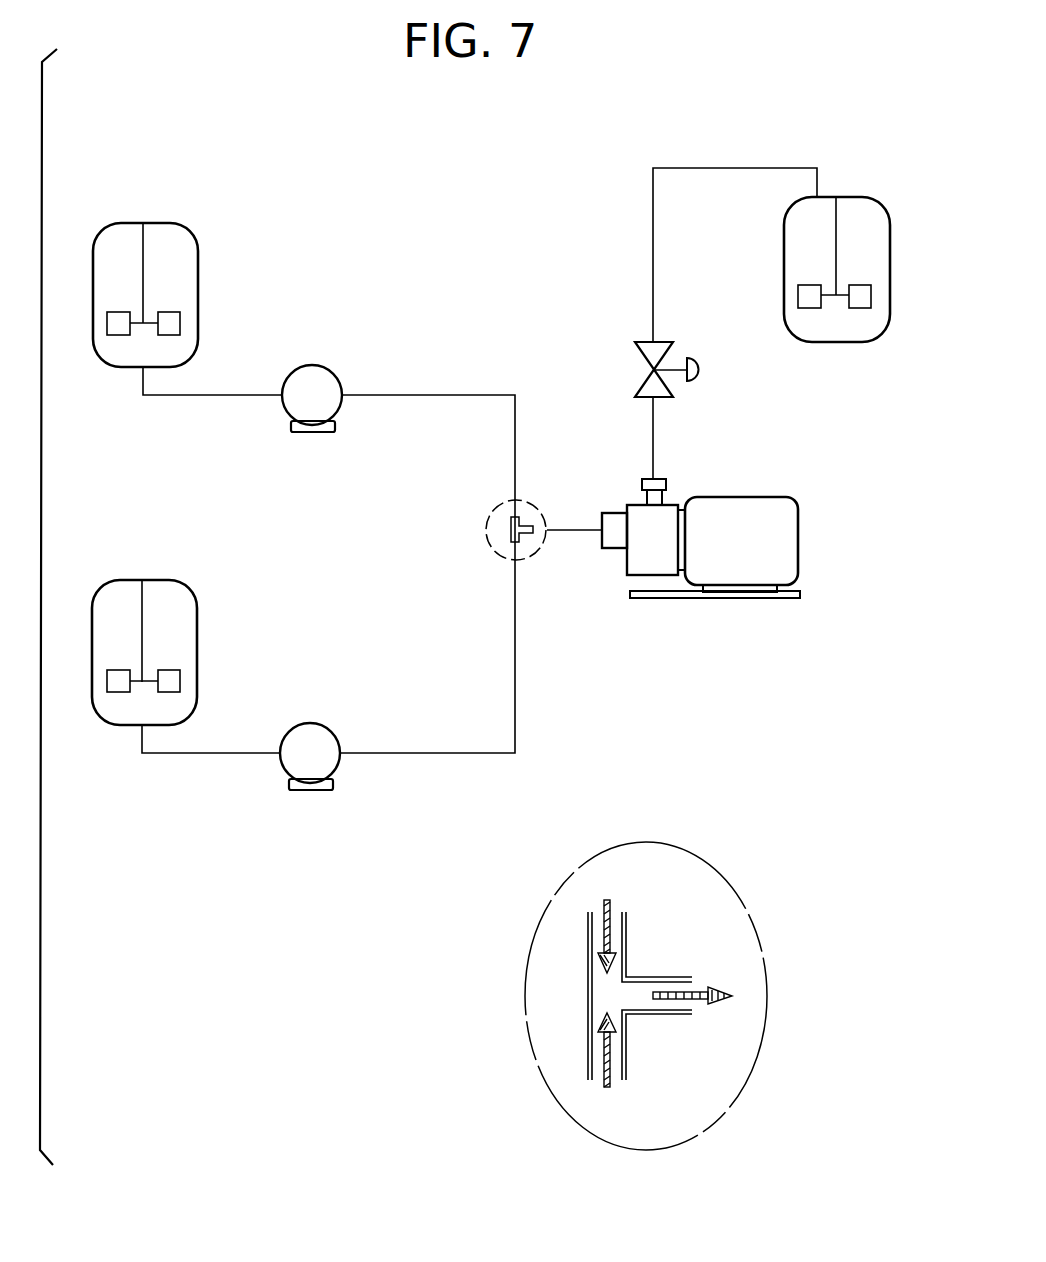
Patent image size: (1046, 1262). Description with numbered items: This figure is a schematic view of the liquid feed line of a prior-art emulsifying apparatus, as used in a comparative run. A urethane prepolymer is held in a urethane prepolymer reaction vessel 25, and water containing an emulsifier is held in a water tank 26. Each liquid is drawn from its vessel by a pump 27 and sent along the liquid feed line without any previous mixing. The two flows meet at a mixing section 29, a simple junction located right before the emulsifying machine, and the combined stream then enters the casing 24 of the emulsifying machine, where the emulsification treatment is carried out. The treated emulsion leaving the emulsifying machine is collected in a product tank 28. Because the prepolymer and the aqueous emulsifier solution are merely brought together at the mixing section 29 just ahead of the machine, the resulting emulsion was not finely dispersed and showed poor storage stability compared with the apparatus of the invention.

The casing of the emulsifying machine 24 is at (653, 560).
The urethane prepolymer reaction vessel 25 is at (127, 222).
The water tank 26 is at (138, 580).
The pump 27 is at (312, 365).
The product tank 28 is at (860, 207).
The mixing section 29 is at (487, 525).